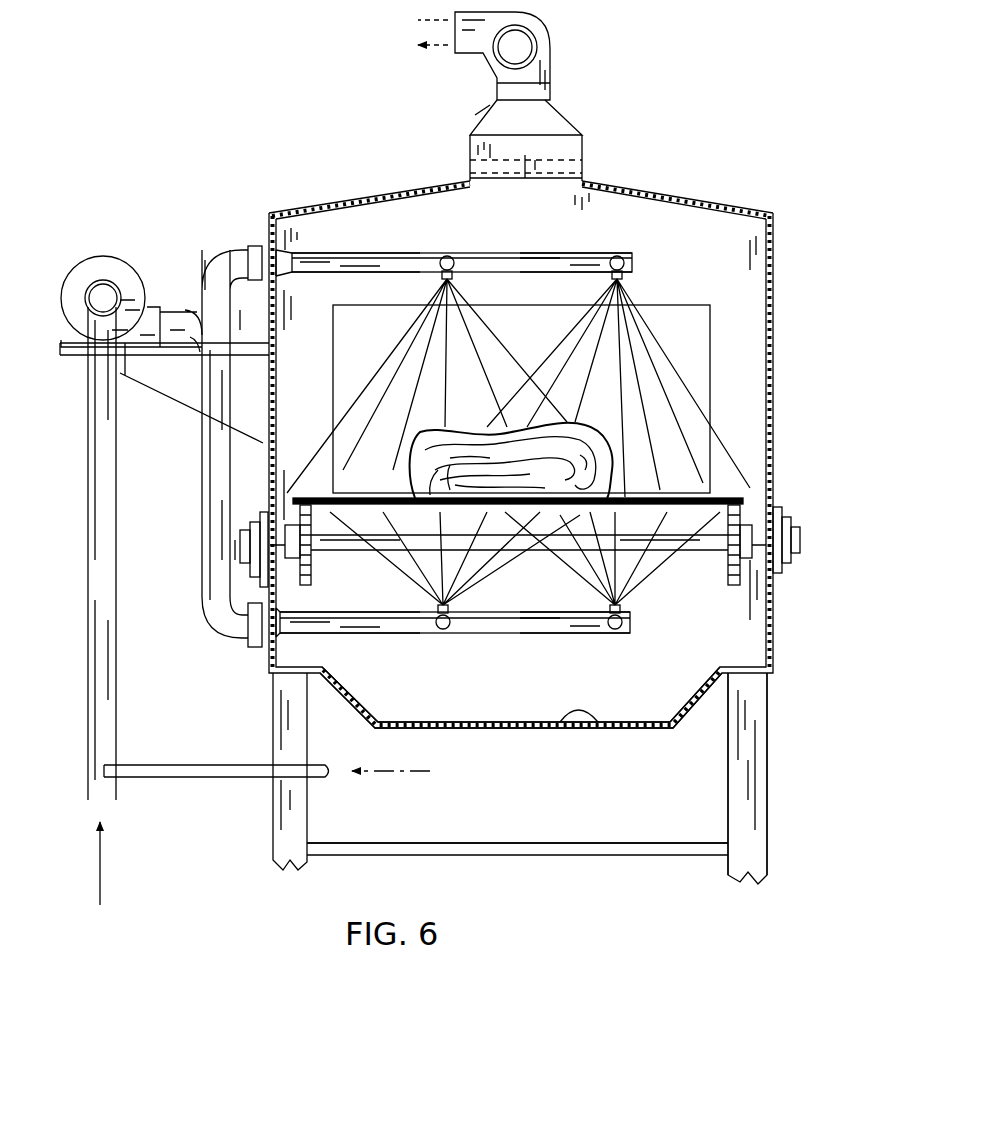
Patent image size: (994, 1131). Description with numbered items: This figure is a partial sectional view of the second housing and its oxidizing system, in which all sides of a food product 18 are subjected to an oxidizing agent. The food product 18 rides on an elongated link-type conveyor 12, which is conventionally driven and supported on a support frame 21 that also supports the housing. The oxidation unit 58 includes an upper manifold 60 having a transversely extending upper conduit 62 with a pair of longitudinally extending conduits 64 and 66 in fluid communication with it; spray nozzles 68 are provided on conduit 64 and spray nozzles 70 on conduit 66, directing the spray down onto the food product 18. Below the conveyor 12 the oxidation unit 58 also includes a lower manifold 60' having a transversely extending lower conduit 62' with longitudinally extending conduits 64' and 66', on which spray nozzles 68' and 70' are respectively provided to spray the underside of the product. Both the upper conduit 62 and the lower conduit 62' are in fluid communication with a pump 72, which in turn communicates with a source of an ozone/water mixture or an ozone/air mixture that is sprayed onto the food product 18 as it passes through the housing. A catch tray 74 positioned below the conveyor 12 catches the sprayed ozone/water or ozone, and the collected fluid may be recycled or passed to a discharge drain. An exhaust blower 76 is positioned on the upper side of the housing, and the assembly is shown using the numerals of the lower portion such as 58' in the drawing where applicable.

The exhaust blower 76 is at (548, 27).
The pump 72 is at (86, 258).
The upper manifold 60 is at (356, 210).
The upper conduit 62 is at (454, 212).
The longitudinally extending conduit 64 is at (401, 217).
The oxidation unit 58 is at (599, 211).
The longitudinally extending conduit 66 is at (679, 219).
The spray nozzles 68 is at (427, 382).
The spray nozzles 70 is at (618, 384).
The food product 18 is at (603, 462).
The conveyor 12 is at (726, 492).
The lower manifold 60' is at (350, 644).
The lower conduit 62' is at (453, 640).
The longitudinally extending conduit 64' is at (438, 644).
The lower spray header section 58' is at (575, 644).
The longitudinally extending conduit 66' is at (634, 644).
The spray nozzles 68' is at (452, 562).
The spray nozzles 70' is at (620, 562).
The catch tray 74 is at (605, 723).
The support frame 21 is at (753, 746).